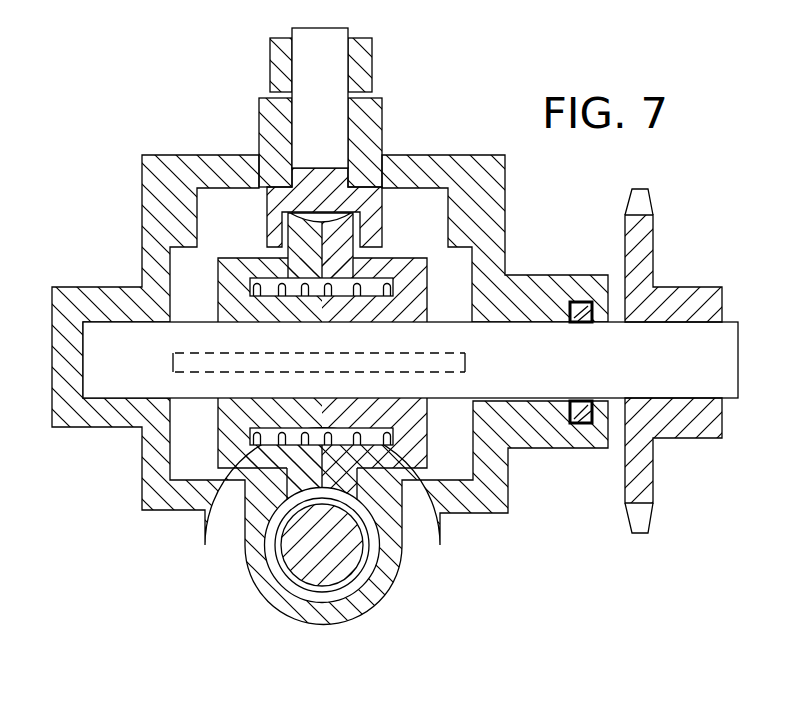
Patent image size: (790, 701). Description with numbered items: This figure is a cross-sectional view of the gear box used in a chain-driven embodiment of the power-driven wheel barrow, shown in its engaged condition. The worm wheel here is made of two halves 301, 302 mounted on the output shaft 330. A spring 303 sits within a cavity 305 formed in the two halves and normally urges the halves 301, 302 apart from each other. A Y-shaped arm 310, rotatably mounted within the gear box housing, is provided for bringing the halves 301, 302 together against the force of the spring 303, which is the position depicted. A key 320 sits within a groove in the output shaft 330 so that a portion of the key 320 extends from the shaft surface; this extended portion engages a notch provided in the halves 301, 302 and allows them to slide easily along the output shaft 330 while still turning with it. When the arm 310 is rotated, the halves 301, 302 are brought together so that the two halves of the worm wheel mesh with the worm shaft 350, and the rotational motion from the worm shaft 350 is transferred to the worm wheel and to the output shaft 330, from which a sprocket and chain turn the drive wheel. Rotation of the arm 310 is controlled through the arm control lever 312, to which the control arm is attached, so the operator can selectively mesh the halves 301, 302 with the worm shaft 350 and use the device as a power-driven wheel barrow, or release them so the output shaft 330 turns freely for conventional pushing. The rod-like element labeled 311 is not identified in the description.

The worm wheel half 301 is at (417, 295).
The worm wheel half 302 is at (233, 287).
The spring 303 is at (257, 447).
The cavity 305 is at (387, 282).
The Y-shaped arm 310 is at (372, 195).
The adjusting rod 311 is at (335, 70).
The arm control lever 312 is at (270, 72).
The key 320 is at (478, 365).
The output shaft 330 is at (549, 388).
The worm shaft 350 is at (305, 555).